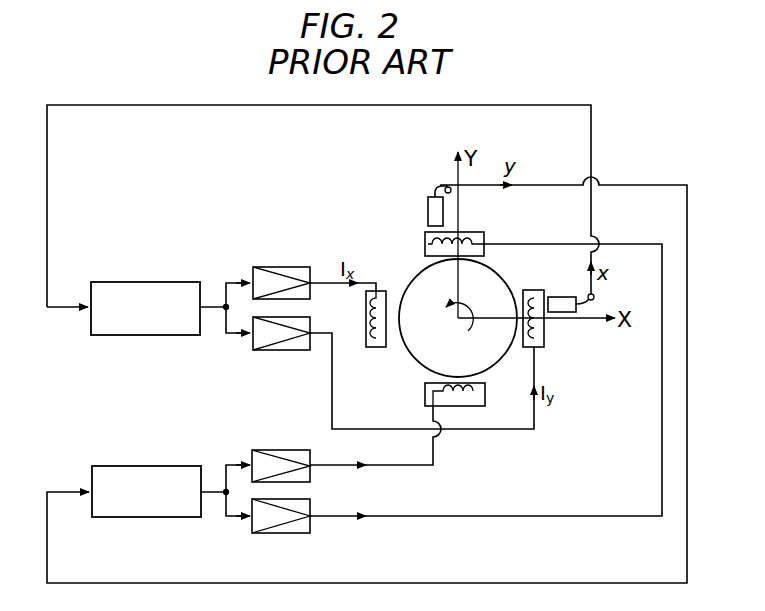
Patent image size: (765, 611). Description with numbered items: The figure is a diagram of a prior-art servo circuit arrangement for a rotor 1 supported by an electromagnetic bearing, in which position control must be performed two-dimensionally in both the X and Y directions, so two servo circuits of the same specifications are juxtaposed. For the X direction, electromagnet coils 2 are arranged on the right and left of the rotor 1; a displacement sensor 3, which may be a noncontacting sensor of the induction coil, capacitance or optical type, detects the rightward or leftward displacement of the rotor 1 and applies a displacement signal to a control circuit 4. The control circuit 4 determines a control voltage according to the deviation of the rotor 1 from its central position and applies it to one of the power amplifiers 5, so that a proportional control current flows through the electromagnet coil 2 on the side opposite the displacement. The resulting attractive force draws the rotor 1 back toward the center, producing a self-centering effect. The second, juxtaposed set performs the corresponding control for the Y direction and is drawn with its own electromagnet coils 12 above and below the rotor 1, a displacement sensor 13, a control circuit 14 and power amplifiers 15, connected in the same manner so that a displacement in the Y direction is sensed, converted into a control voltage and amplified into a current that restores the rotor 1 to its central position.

The rotor 1 is at (496, 273).
The electromagnet coil 2 is at (383, 291).
The displacement sensor 3 is at (561, 297).
The control circuit 4 is at (180, 282).
The power amplifier 5 is at (293, 267).
The y-direction electromagnets 12 is at (497, 361).
The y-direction position sensor 13 is at (431, 197).
The control circuit (y) 14 is at (182, 466).
The amplifiers (y) 15 is at (290, 450).